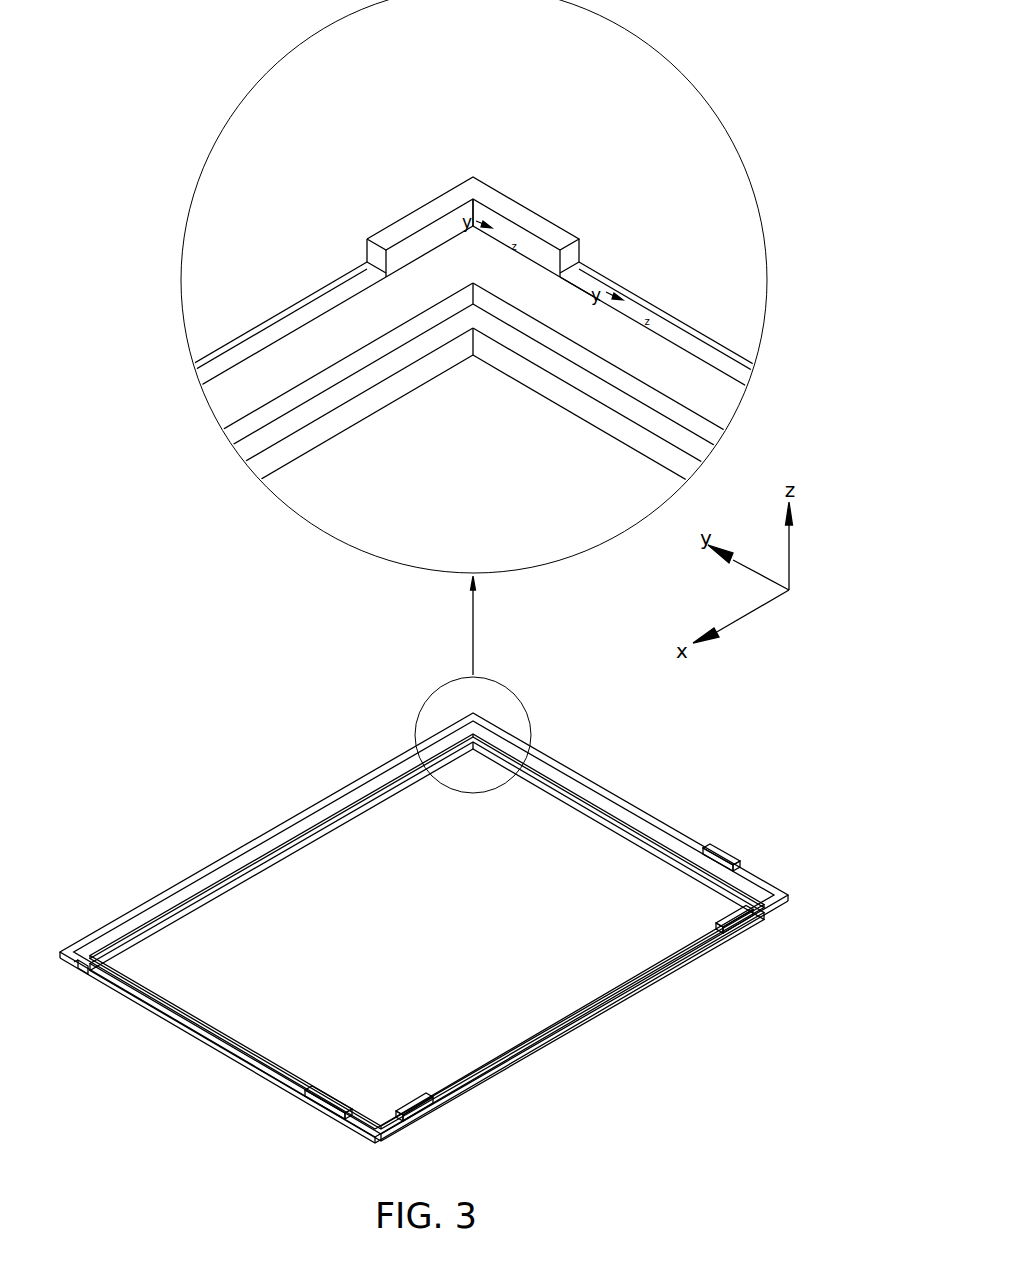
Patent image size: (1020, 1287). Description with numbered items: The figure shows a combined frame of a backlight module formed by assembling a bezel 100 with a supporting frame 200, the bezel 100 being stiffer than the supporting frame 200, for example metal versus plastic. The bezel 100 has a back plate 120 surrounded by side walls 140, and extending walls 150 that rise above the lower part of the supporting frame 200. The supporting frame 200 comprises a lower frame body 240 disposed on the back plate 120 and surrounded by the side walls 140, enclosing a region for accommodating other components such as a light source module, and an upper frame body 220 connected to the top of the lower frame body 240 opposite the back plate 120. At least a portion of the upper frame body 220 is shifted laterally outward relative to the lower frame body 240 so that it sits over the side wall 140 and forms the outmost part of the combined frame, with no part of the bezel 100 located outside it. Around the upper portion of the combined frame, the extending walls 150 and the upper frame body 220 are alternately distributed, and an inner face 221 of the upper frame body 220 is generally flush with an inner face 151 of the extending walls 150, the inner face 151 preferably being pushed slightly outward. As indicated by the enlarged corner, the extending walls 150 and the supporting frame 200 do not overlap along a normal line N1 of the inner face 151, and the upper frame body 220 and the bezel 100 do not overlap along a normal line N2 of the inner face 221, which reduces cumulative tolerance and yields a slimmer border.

The bezel 100 is at (719, 943).
The back plate 120 is at (209, 1025).
The side wall 140 is at (86, 969).
The extending wall 150 is at (640, 297).
The inner face of the extending wall 151 is at (673, 333).
The supporting frame 200 is at (617, 143).
The upper frame body 220 is at (540, 230).
The inner face of the upper frame body 221 is at (488, 216).
The lower frame body 240 is at (574, 304).
The normal line of the inner face of the extending walls N1 is at (566, 367).
The normal line of the inner face of the upper frame body N2 is at (458, 284).